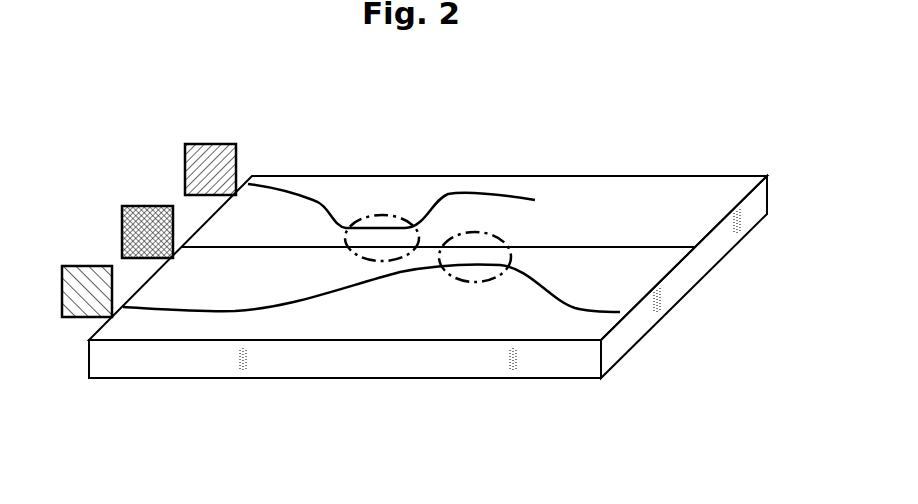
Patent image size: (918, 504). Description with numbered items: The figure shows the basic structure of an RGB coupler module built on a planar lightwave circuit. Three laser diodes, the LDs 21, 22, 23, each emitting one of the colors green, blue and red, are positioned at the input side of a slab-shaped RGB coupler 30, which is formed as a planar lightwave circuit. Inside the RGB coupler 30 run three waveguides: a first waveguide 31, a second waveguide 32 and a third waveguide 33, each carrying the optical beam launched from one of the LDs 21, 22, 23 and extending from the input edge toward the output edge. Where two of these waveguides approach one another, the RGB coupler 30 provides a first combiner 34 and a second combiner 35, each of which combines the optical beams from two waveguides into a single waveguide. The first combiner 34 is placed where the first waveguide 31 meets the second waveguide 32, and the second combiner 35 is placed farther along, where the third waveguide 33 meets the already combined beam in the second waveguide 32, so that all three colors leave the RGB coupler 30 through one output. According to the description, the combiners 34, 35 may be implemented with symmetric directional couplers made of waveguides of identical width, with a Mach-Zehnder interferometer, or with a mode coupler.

The LD 21 is at (210, 143).
The LD 22 is at (148, 205).
The LD 23 is at (88, 265).
The RGB coupler 30 is at (553, 176).
The first waveguide 31 is at (305, 195).
The second waveguide 32 is at (284, 248).
The third waveguide 33 is at (208, 312).
The first combiner 34 is at (380, 213).
The second combiner 35 is at (465, 282).